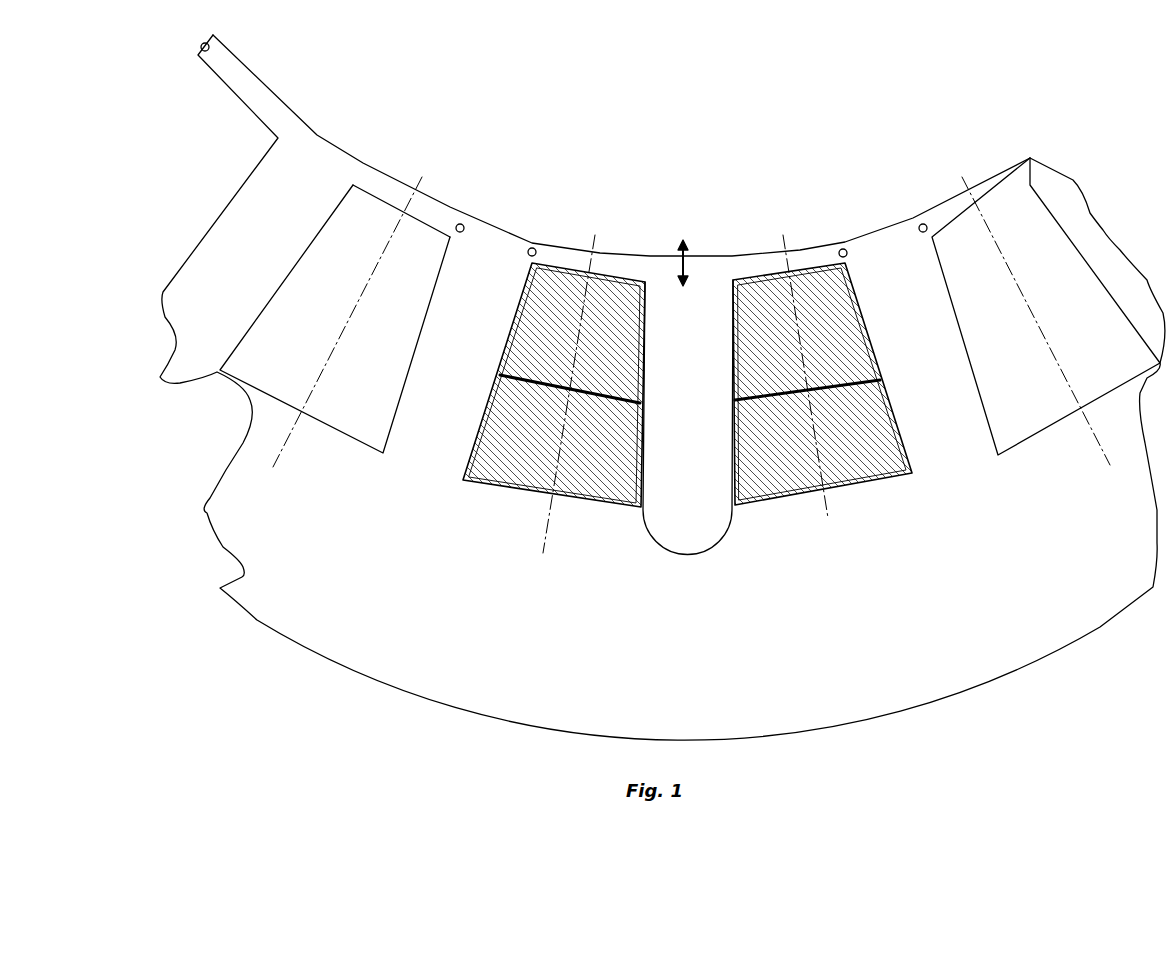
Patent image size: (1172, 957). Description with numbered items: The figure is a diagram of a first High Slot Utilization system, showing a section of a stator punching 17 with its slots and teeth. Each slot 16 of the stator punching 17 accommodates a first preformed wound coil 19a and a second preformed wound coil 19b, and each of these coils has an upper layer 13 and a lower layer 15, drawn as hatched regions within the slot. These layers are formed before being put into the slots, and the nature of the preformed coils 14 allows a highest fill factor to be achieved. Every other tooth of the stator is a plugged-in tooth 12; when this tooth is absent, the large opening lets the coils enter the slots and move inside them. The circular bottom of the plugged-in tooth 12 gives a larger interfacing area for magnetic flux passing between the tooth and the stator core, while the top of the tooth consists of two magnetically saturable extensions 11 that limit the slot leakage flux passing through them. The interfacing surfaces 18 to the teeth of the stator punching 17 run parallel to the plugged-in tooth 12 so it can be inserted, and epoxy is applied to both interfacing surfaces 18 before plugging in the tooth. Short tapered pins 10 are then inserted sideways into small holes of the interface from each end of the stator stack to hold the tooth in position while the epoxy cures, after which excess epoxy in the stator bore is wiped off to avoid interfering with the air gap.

The short tapered pins 10 is at (852, 253).
The magnetically saturable extensions 11 is at (433, 212).
The plugged-in tooth 12 is at (253, 265).
The upper layer 13 is at (613, 365).
The preformed coils 14 is at (347, 322).
The lower layer 15 is at (862, 463).
The slot 16 is at (1020, 420).
The stator punching 17 is at (1043, 577).
The interfacing surfaces 18 is at (210, 42).
The first preformed wound coil 19a is at (765, 397).
The second preformed wound coil 19b is at (610, 397).